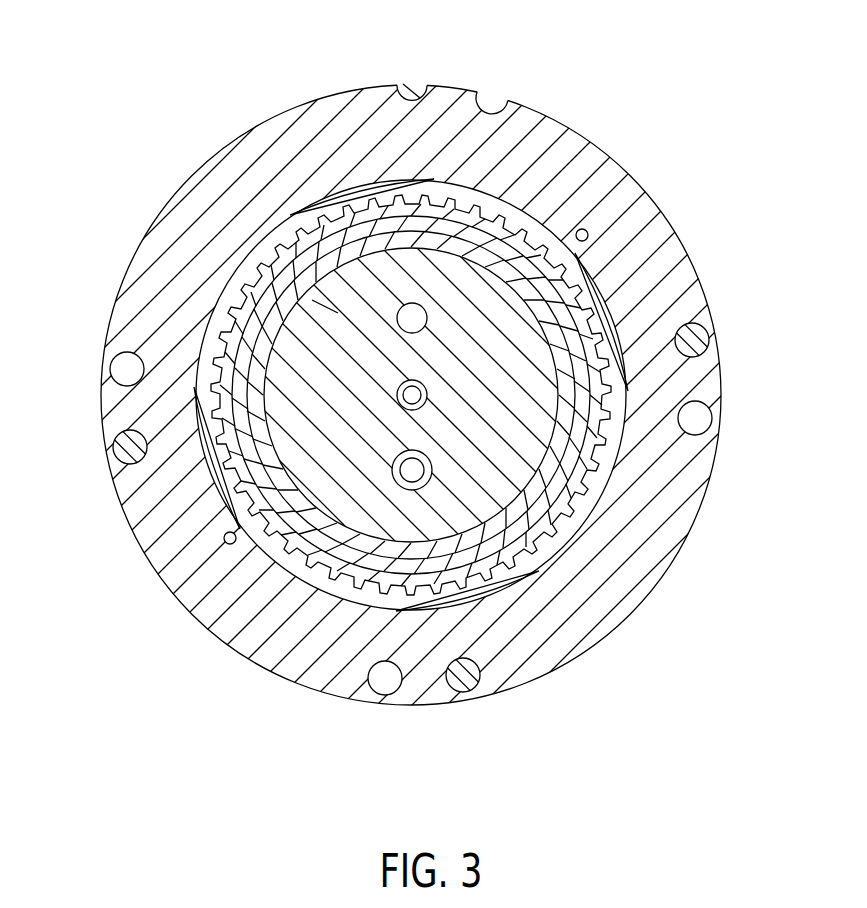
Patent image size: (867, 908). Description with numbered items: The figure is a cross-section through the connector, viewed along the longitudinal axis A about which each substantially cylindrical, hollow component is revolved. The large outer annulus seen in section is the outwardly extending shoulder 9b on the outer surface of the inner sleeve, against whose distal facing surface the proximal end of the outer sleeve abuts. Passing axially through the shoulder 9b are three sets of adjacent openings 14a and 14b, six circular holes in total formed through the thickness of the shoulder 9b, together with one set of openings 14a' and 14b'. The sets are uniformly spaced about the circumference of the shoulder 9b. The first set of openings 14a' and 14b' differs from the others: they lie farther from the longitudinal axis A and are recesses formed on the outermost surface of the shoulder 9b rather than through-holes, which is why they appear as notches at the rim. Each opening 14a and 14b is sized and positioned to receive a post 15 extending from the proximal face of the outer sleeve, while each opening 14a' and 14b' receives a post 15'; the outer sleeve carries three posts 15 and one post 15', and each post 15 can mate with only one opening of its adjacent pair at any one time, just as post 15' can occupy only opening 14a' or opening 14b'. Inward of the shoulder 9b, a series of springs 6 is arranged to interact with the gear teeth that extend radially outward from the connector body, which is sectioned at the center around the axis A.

The shoulder 9b is at (190, 194).
The longitudinal axis A is at (403, 380).
The opening 14a is at (409, 554).
The opening 14b is at (411, 498).
The post 15 is at (411, 544).
The opening 14b' is at (403, 59).
The post 15' is at (425, 57).
The opening 14a' is at (502, 80).
The spring 6 is at (408, 180).